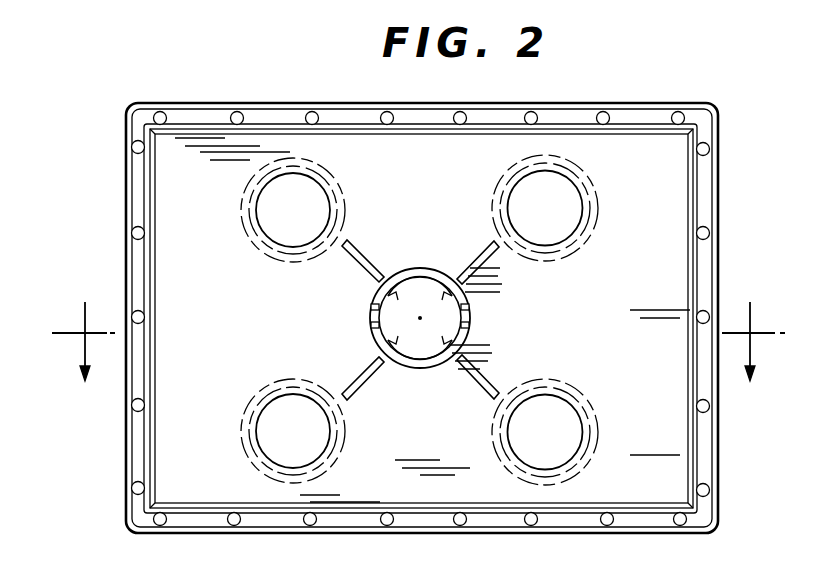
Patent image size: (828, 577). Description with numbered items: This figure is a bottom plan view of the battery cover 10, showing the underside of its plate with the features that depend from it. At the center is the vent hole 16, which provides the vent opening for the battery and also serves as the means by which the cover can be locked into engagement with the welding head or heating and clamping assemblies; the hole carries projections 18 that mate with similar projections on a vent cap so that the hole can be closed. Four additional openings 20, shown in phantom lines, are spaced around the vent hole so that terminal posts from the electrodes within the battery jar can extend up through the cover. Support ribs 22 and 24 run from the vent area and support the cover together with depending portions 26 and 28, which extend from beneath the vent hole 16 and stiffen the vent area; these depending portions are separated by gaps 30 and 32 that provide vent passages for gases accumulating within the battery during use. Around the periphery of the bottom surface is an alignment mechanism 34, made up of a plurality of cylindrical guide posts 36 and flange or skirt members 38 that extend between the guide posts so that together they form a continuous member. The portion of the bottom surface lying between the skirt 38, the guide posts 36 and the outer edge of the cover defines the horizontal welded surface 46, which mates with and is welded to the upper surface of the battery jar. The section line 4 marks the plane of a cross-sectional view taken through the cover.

The cover 10 is at (330, 90).
The vent hole 16 is at (379, 291).
The projections 18 is at (422, 319).
The openings 20 is at (493, 175).
The support rib 22 is at (370, 364).
The support rib 24 is at (358, 247).
The depending portion 26 is at (410, 368).
The depending portion 28 is at (452, 258).
The gap 30 is at (480, 313).
The gap 32 is at (364, 317).
The alignment mechanism 34 is at (738, 93).
The guide posts 36 is at (710, 232).
The flange or skirt members 38 is at (702, 197).
The horizontal welded surface 46 is at (708, 297).
The section line 4- 4 is at (418, 362).